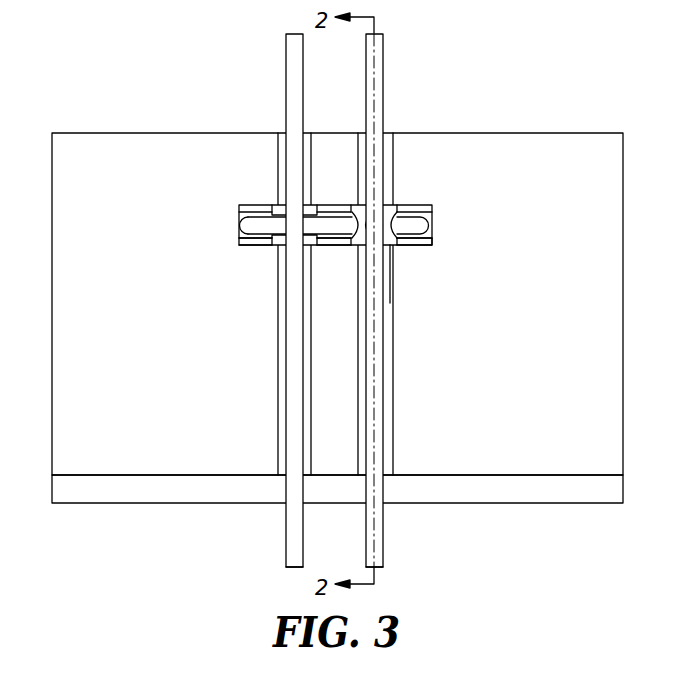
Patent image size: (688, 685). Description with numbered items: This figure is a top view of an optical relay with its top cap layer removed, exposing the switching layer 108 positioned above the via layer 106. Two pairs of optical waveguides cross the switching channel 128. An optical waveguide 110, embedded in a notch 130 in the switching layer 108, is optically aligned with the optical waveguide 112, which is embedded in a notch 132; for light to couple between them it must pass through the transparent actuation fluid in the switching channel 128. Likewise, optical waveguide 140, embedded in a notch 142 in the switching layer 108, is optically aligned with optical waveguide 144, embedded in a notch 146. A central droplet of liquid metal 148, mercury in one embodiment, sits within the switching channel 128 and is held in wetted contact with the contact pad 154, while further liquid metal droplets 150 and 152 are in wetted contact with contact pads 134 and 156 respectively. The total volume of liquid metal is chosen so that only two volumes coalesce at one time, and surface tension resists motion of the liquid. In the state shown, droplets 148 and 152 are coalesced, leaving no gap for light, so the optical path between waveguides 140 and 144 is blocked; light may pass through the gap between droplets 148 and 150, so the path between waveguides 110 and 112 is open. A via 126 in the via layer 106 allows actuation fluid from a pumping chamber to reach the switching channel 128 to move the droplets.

The via layer 106 is at (127, 504).
The switching layer 108 is at (126, 133).
The optical waveguide 110 is at (384, 545).
The optical waveguide 112 is at (384, 58).
The via 126 is at (380, 216).
The switching channel 128 is at (390, 303).
The notch 130 is at (393, 476).
The notch 132 is at (387, 132).
The contact pad 134 is at (424, 244).
The optical waveguide 140 is at (285, 545).
The notch 142 is at (281, 476).
The optical waveguide 144 is at (285, 58).
The notch 146 is at (280, 132).
The central liquid metal droplet 148 is at (339, 223).
The liquid metal droplet 150 is at (424, 224).
The liquid metal droplet 152 is at (240, 221).
The contact pad 154 is at (333, 246).
The contact pad 156 is at (248, 246).